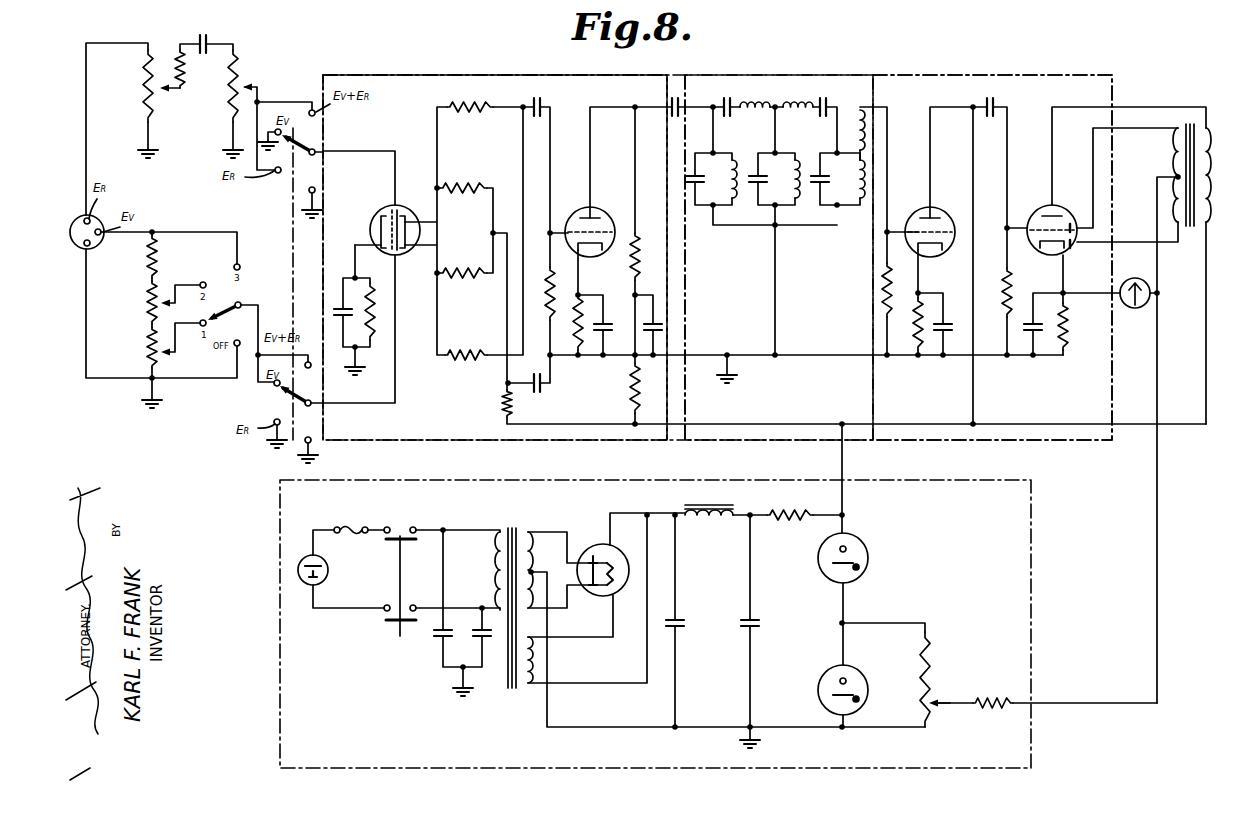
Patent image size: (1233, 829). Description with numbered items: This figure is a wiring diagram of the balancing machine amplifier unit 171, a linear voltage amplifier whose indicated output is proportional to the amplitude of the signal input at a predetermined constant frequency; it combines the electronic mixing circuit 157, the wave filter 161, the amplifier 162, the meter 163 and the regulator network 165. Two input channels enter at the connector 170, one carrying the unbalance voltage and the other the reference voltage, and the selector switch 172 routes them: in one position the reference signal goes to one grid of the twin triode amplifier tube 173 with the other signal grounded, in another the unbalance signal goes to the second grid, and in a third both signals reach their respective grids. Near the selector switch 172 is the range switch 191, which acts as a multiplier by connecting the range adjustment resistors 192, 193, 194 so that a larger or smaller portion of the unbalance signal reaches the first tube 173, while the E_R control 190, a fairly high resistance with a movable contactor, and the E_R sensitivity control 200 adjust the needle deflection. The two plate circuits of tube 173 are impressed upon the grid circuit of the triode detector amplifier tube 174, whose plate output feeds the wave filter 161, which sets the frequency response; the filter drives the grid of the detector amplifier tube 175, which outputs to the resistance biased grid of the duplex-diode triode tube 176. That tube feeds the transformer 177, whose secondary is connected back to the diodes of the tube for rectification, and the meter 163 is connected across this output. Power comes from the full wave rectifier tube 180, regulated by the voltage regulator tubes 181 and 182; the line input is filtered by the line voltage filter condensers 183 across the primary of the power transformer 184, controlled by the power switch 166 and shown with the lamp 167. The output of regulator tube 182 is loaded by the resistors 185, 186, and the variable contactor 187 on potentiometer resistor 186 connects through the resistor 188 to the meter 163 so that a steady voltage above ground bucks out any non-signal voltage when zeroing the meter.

The electronic mixing circuit 157 is at (581, 74).
The wave filter 161 is at (796, 75).
The amplifier 162 is at (999, 75).
The meter 163 is at (1149, 301).
The regulator network 165 is at (1033, 548).
The power switch 166 is at (396, 575).
The pilot lamp 167 is at (306, 600).
The connector 170 is at (100, 226).
The balancing machine amplifier unit 171 is at (402, 46).
The selector switch 172 is at (308, 193).
The twin triode amplifier tube 173 is at (377, 207).
The triode detector amplifier tube 174 is at (592, 207).
The detector amplifier tube 175 is at (908, 213).
The duplex-diode triode tube 176 is at (1036, 208).
The transformer 177 is at (1186, 120).
The full wave rectifier tube 180 is at (598, 546).
The voltage regulator tube 181 is at (870, 557).
The voltage regulator tube 182 is at (818, 691).
The line voltage filter condensers 183 is at (479, 646).
The power transformer 184 is at (506, 526).
The resistor 185 is at (934, 650).
The potentiometer resistor 186 is at (922, 701).
The variable contactor 187 is at (975, 696).
The resistor 188 is at (989, 713).
The E_R control 190 is at (251, 85).
The range switch 191 is at (232, 303).
The range adjustment resistor 192 is at (147, 354).
The range adjustment resistor 193 is at (147, 304).
The range adjustment resistor 194 is at (147, 261).
The E_R sensitivity control 200 is at (134, 93).